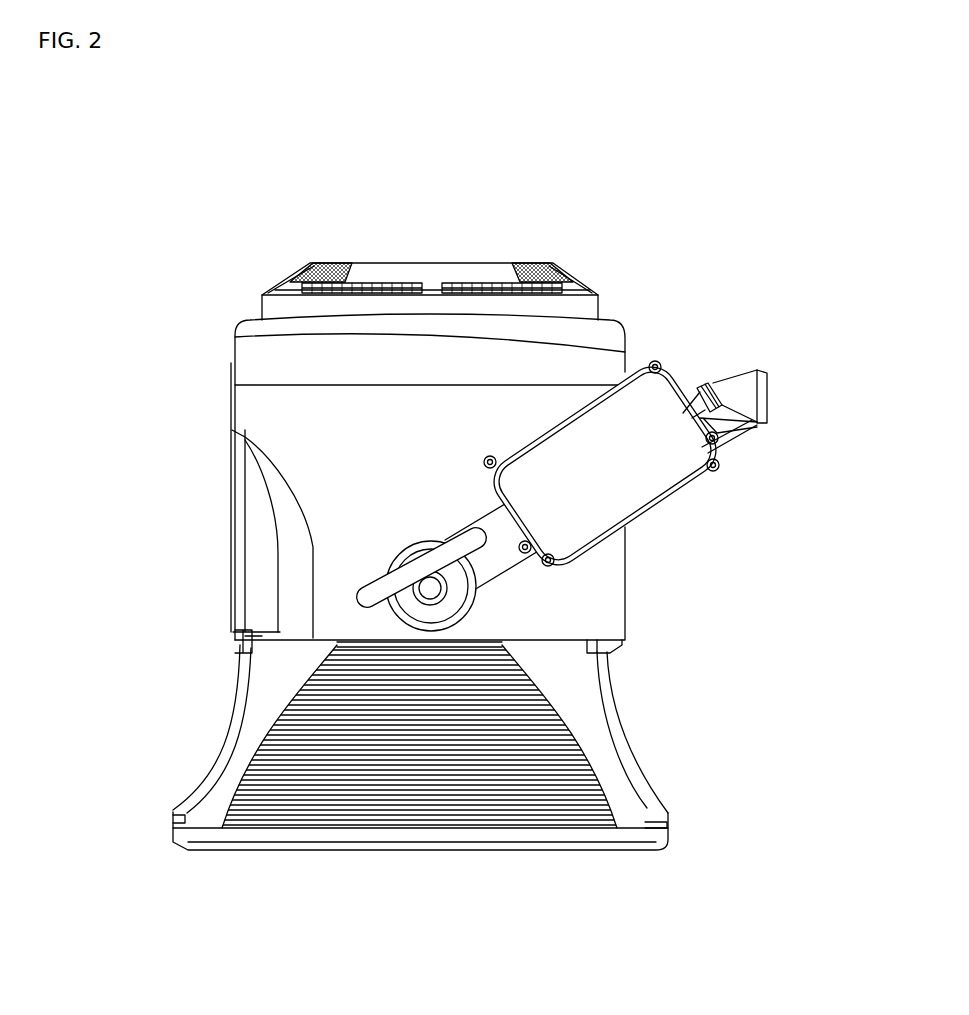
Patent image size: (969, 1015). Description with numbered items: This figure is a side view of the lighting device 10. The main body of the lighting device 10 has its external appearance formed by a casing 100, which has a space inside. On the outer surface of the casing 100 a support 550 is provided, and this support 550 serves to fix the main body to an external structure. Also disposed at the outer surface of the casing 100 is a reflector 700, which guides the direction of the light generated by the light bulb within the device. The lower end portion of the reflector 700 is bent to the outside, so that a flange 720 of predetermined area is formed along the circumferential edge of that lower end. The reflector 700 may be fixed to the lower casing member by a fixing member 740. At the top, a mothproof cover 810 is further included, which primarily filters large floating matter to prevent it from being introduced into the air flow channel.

The lighting device 10 is at (107, 231).
The casing 100 is at (233, 346).
The support 550 is at (762, 397).
The reflector 700 is at (552, 743).
The flange 720 is at (648, 835).
The fixing member 740 is at (237, 573).
The mothproof cover 810 is at (292, 292).